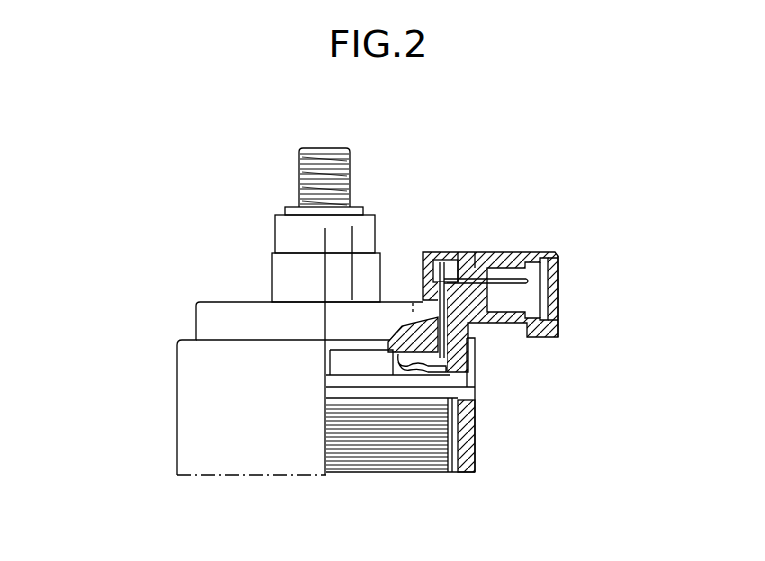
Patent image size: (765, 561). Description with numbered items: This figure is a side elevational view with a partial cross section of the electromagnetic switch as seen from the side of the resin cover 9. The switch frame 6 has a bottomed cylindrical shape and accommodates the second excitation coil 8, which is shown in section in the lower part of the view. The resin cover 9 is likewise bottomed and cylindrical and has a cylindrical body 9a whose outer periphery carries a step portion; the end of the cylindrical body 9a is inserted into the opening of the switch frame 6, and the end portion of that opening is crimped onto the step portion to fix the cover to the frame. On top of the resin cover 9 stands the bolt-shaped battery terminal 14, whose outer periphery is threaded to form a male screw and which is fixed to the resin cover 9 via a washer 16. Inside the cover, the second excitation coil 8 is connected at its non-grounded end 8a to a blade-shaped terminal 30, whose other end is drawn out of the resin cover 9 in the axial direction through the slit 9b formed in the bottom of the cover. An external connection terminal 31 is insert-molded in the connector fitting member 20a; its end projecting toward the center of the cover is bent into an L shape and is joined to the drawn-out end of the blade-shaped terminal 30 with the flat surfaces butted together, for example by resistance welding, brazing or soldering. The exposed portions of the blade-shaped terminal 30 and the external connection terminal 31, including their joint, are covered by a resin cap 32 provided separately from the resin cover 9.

The battery terminal 14 is at (332, 170).
The washer 16 is at (293, 207).
The resin cover 9 is at (225, 323).
The blade-shaped terminal 30 is at (422, 292).
The cap 32 is at (457, 249).
The external connection terminal 31 is at (502, 277).
The connector fitting member 20a is at (540, 250).
The slit 9b is at (452, 312).
The cylindrical body 9a is at (462, 350).
The switch frame 6 is at (468, 435).
The second excitation coil 8 is at (346, 455).
The non-grounded end 8a is at (412, 380).